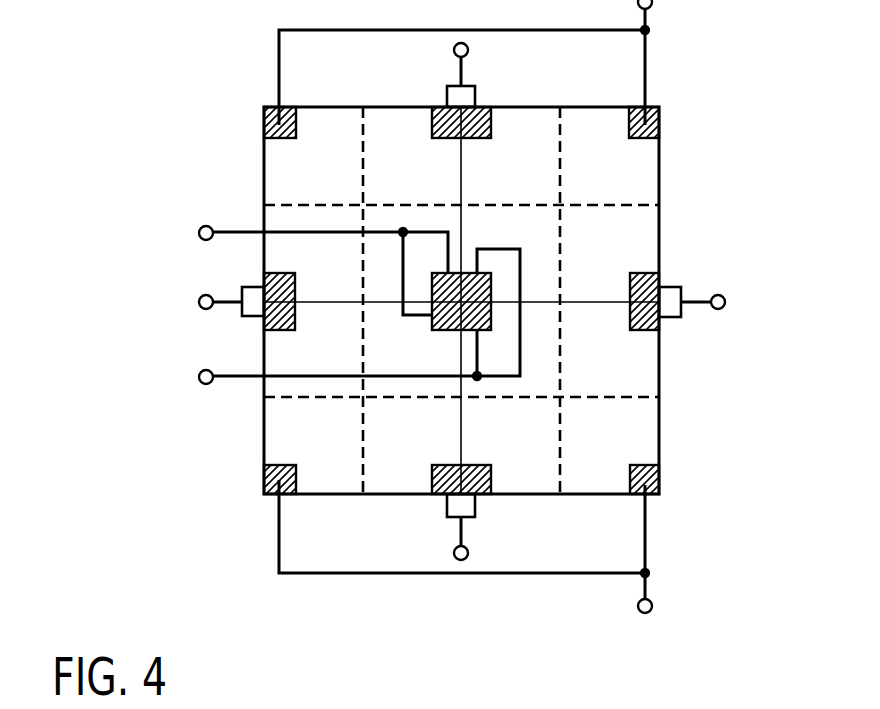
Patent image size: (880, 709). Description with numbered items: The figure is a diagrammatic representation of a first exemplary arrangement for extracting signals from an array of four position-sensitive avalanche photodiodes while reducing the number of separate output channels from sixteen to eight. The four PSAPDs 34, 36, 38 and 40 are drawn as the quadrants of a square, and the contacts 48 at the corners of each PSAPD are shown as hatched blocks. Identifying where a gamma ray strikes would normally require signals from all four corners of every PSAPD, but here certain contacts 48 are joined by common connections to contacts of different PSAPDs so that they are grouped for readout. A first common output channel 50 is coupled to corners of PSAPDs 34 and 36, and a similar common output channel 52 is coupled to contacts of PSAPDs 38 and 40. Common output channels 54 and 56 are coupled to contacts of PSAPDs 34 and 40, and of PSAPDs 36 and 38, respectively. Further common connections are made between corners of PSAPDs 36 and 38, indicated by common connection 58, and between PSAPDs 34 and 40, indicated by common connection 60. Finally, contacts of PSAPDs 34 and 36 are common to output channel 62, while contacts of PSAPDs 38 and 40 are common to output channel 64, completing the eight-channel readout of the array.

The PSAPD 34 is at (283, 178).
The PSAPD 36 is at (640, 172).
The PSAPD 38 is at (632, 440).
The PSAPD 40 is at (283, 438).
The contacts 48 is at (264, 127).
The first common output channel 50 is at (458, 72).
The common output channel 52 is at (478, 528).
The common output channel 54 is at (205, 296).
The common output channel 56 is at (718, 310).
The common connection 58 is at (205, 370).
The common connection 60 is at (205, 226).
The output channel 62 is at (632, 0).
The output channel 64 is at (636, 606).